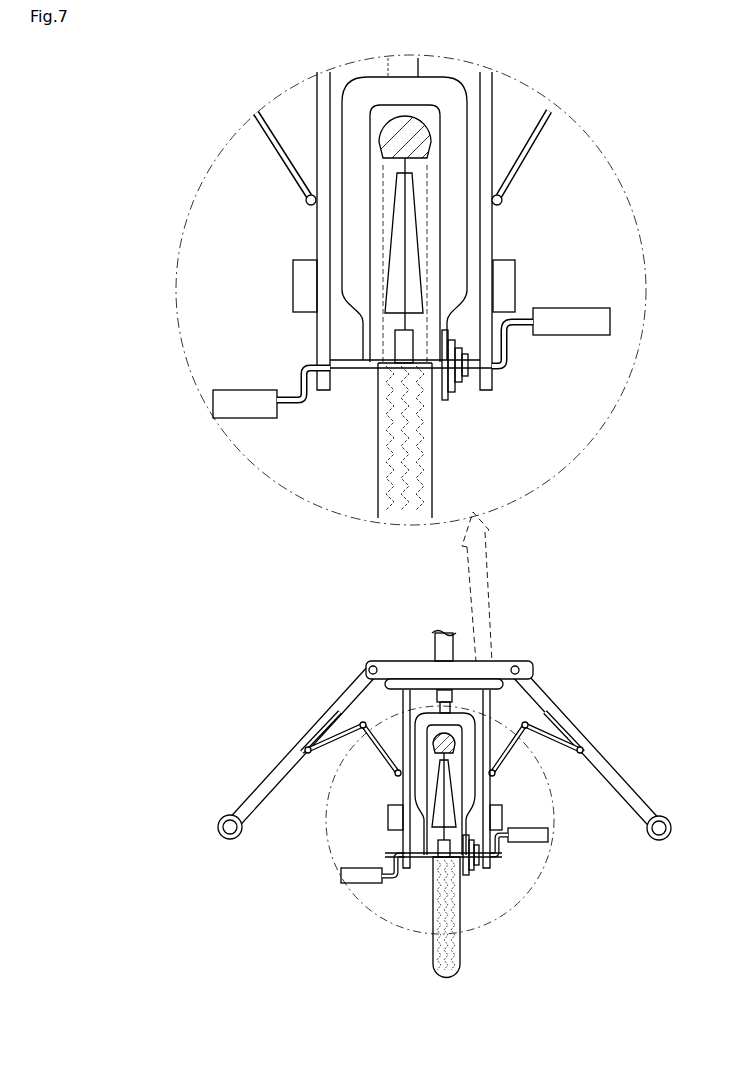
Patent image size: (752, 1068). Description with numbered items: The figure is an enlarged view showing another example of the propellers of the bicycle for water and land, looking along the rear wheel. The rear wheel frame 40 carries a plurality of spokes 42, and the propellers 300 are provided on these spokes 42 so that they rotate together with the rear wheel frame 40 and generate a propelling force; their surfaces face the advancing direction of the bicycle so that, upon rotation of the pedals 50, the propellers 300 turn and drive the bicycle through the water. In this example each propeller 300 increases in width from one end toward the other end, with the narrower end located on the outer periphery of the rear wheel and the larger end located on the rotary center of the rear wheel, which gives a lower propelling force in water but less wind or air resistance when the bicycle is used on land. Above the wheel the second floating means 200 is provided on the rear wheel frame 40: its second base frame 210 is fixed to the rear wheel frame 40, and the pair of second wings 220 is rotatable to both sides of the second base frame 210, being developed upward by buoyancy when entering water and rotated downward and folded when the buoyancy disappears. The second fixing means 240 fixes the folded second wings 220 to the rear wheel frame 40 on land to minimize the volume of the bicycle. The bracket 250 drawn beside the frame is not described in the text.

The propellers 300 is at (389, 221).
The spokes 42 is at (403, 242).
The coupling bracket 250 is at (512, 277).
The pedals 50 is at (570, 336).
The rear wheel frame 40 is at (364, 427).
The second floating means 200 is at (444, 723).
The second base frame 210 is at (410, 672).
The second wings 220 is at (607, 770).
The second fixing means 240 is at (501, 811).